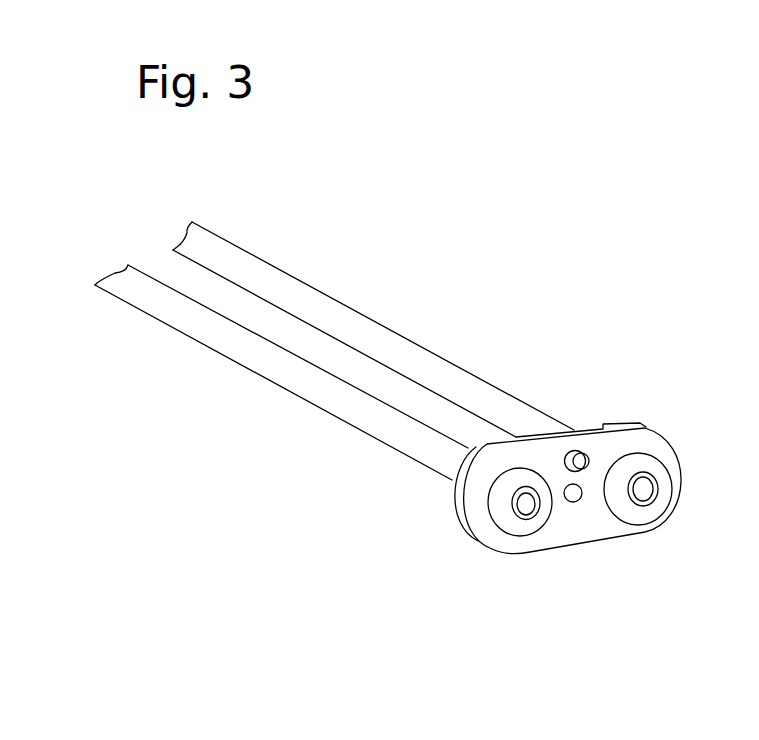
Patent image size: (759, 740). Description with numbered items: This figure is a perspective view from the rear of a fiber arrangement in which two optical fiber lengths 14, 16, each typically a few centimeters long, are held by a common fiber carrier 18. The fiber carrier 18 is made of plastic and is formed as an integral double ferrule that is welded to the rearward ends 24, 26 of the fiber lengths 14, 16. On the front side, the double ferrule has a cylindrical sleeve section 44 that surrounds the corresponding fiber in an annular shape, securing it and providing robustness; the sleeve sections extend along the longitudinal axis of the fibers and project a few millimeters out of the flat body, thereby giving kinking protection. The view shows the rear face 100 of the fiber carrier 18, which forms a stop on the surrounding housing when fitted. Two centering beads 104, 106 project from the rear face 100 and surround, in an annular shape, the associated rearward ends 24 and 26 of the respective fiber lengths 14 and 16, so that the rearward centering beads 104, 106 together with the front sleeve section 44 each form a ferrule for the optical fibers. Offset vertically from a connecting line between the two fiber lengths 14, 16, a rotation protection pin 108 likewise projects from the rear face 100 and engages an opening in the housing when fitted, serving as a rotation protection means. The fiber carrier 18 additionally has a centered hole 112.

The fiber length 14 is at (379, 440).
The fiber length 16 is at (476, 372).
The fiber carrier 18 is at (565, 484).
The cylindrical sleeve section 44 is at (458, 473).
The rear face 100 is at (582, 528).
The centering bead 104 is at (497, 505).
The centering bead 106 is at (657, 508).
The rearward end 24 is at (515, 515).
The rearward end 26 is at (658, 490).
The rotation protection pin 108 is at (579, 450).
The centered hole 112 is at (573, 493).